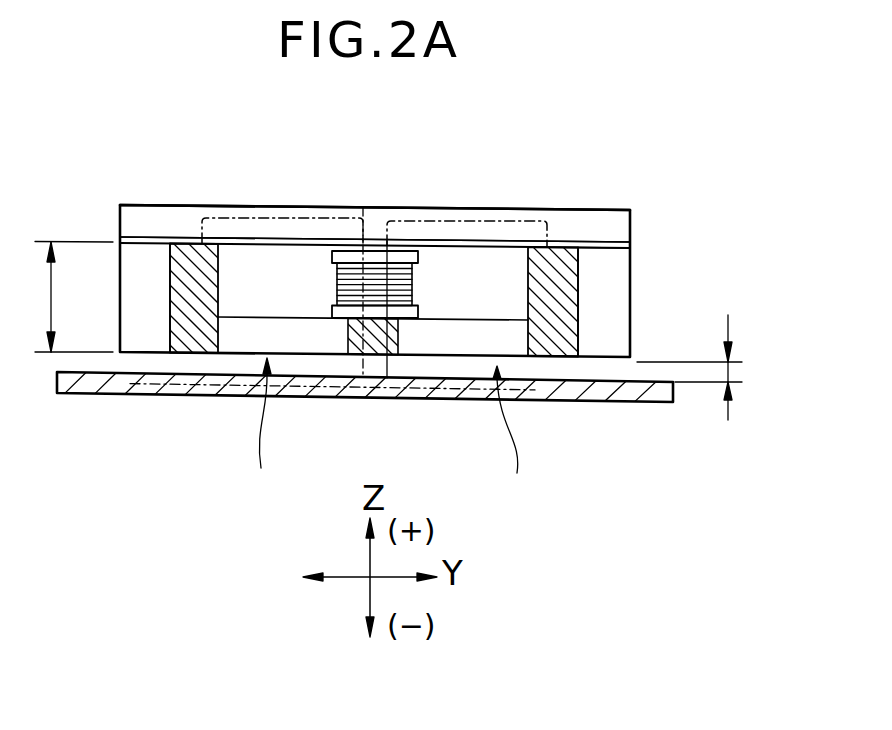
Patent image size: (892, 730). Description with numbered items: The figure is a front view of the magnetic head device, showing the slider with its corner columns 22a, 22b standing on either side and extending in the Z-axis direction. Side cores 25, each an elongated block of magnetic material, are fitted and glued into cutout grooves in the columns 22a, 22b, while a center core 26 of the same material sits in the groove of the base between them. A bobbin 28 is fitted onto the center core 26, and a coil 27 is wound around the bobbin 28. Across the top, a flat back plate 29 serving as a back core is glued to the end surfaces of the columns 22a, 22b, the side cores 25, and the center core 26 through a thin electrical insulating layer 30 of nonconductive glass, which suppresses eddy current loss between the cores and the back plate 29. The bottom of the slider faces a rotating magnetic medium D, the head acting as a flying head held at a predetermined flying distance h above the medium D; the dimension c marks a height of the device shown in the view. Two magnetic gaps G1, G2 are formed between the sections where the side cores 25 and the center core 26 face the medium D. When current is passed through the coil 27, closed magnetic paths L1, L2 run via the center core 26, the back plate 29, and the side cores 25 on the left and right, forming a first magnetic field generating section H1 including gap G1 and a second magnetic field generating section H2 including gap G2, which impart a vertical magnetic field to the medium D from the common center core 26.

The column 22a is at (602, 328).
The column 22b is at (148, 330).
The side core 25 is at (185, 340).
The center core 26 is at (363, 356).
The coil 27 is at (412, 276).
The bobbin 28 is at (342, 250).
The back plate 29 is at (590, 222).
The electrical insulating layer 30 is at (630, 245).
The closed magnetic path L1 is at (266, 216).
The closed magnetic path L2 is at (500, 219).
The magnetic gap G1 is at (305, 342).
The magnetic gap G2 is at (460, 342).
The first magnetic field generating section H1 is at (271, 433).
The second magnetic field generating section H2 is at (522, 439).
The magnetic medium D is at (658, 393).
The magnet height c is at (70, 297).
The flying distance h is at (705, 367).